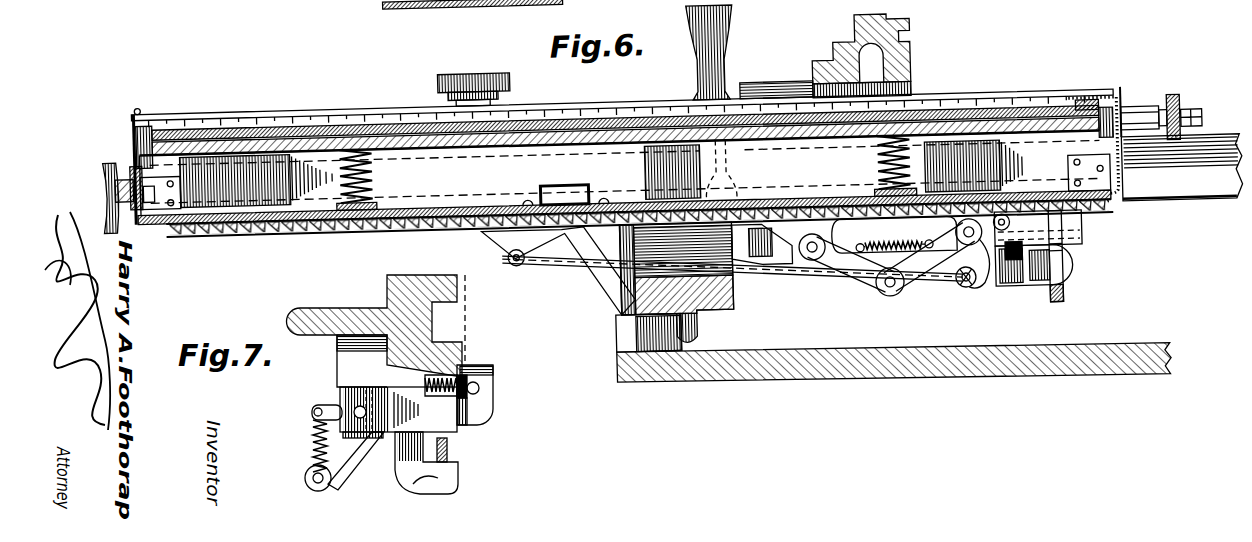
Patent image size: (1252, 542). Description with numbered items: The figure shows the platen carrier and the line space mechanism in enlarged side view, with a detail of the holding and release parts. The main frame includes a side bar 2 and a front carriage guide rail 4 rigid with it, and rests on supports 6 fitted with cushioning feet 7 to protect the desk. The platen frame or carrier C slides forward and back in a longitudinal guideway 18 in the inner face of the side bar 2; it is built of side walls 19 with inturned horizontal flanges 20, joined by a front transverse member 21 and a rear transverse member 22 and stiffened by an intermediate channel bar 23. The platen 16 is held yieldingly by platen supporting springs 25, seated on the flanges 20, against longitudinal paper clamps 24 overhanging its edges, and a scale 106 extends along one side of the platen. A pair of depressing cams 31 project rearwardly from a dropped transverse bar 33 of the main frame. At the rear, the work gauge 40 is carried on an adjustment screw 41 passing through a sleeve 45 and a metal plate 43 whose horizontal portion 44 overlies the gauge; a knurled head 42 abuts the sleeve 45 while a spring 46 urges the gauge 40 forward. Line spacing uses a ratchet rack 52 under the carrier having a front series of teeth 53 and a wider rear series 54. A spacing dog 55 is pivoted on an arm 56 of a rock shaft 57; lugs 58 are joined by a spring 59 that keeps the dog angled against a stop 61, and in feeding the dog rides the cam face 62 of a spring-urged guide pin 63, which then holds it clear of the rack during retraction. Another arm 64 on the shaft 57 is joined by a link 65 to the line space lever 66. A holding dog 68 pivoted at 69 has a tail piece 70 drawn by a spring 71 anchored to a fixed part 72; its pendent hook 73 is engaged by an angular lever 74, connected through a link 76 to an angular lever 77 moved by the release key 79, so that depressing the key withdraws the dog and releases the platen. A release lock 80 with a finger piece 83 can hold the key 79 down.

In FIG. 6, the side bar 2 is at (1210, 224).
In FIG. 7, the side bar 2 is at (342, 308).
In FIG. 6, the front carriage guide rail 4 is at (916, 35).
In FIG. 6, the support 6 is at (612, 287).
In FIG. 6, the cushioning foot 7 is at (614, 318).
In FIG. 6, the platen 16 is at (800, 147).
In FIG. 6, the guideway 18 is at (1182, 167).
In FIG. 7, the guideway 18 is at (450, 320).
In FIG. 6, the side wall 19 is at (494, 154).
In FIG. 6, the horizontal flange 20 is at (630, 199).
In FIG. 6, the front transverse member 21 is at (132, 168).
In FIG. 6, the rear transverse member 22 is at (1078, 184).
In FIG. 6, the transverse channel bar 23 is at (560, 184).
In FIG. 6, the paper clamp 24 is at (656, 103).
In FIG. 6, the platen supporting spring 25 is at (375, 173).
In FIG. 6, the depressing cam 31 is at (588, 0).
In FIG. 6, the transverse bar 33 is at (736, 317).
In FIG. 6, the work gauge 40 is at (1152, 182).
In FIG. 6, the adjustment screw 41 is at (1204, 133).
In FIG. 6, the knurled head 42 is at (1182, 118).
In FIG. 6, the metal plate 43 is at (1116, 199).
In FIG. 6, the horizontal portion 44 is at (1083, 112).
In FIG. 6, the sleeve 45 is at (1150, 120).
In FIG. 6, the spring 46 is at (1112, 120).
In FIG. 6, the ratchet rack 52 is at (222, 224).
In FIG. 7, the ratchet rack 52 is at (500, 360).
In FIG. 6, the front series of teeth 53 is at (312, 226).
In FIG. 6, the rear series of teeth 54 is at (1115, 221).
In FIG. 6, the spacing dog 55 is at (908, 292).
In FIG. 6, the arm 56 is at (850, 294).
In FIG. 6, the rock shaft 57 is at (810, 265).
In FIG. 6, the lugs 58 is at (894, 234).
In FIG. 6, the spring 59 is at (893, 233).
In FIG. 6, the stop 61 is at (968, 228).
In FIG. 7, the cam face 62 is at (480, 392).
In FIG. 6, the guide pin 63 is at (1002, 224).
In FIG. 7, the guide pin 63 is at (468, 378).
In FIG. 6, the arm 64 is at (750, 272).
In FIG. 6, the link 65 is at (736, 198).
In FIG. 6, the line space lever 66 is at (742, 25).
In FIG. 6, the holding dog 68 is at (1070, 278).
In FIG. 7, the holding dog 68 is at (495, 410).
In FIG. 6, the pivot 69 is at (1082, 248).
In FIG. 7, the pivot 69 is at (364, 402).
In FIG. 7, the tail piece 70 is at (322, 405).
In FIG. 7, the spring 71 is at (312, 445).
In FIG. 7, the fixed part 72 is at (312, 488).
In FIG. 6, the pendent hook 73 is at (1062, 308).
In FIG. 7, the pendent hook 73 is at (412, 484).
In FIG. 6, the angular lever 74 is at (968, 296).
In FIG. 7, the angular lever 74 is at (449, 450).
In FIG. 6, the link 76 is at (540, 254).
In FIG. 6, the angular lever 77 is at (506, 252).
In FIG. 6, the release key 79 is at (470, 70).
In FIG. 6, the release lock 80 is at (552, 116).
In FIG. 6, the finger piece 83 is at (422, 102).
In FIG. 6, the scale 106 is at (224, 103).
In FIG. 6, the platen frame or carrier C is at (133, 105).